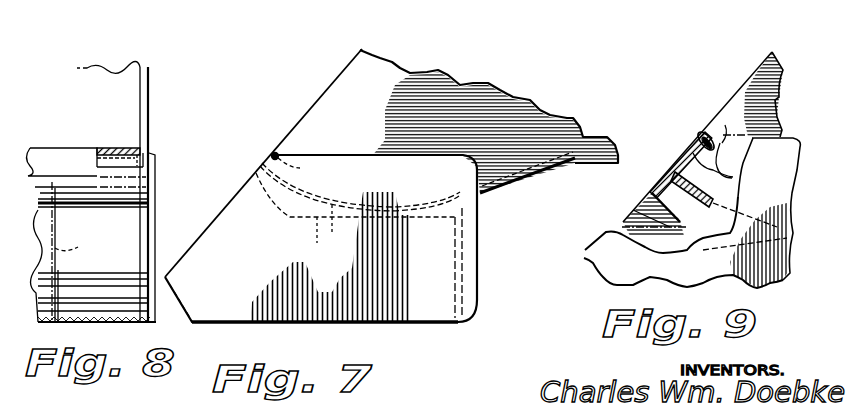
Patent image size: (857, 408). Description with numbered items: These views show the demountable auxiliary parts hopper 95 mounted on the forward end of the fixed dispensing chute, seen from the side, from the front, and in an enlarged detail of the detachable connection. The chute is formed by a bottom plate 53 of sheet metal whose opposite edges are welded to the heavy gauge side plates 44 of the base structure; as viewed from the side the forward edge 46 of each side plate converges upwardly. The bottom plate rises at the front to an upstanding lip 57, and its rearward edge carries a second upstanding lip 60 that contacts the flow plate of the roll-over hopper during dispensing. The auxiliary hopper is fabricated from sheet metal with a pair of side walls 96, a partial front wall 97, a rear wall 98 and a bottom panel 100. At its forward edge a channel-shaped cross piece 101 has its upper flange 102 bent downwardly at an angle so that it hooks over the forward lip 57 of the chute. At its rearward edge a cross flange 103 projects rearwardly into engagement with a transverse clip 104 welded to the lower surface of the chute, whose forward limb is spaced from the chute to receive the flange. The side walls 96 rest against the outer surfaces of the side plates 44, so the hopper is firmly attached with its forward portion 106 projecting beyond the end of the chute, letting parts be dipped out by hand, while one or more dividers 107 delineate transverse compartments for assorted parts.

In FIG. 8, the side plate 44 is at (152, 92).
In FIG. 7, the side plate 44 is at (560, 128).
In FIG. 9, the side plate 44 is at (798, 56).
In FIG. 7, the forward edge 46 is at (325, 93).
In FIG. 9, the forward edge 46 is at (760, 67).
In FIG. 7, the bottom plate 53 is at (355, 212).
In FIG. 8, the upstanding lip 57 is at (147, 153).
In FIG. 9, the upstanding lip 57 is at (737, 163).
In FIG. 7, the upstanding lip 60 is at (582, 129).
In FIG. 8, the auxiliary parts hopper 95 is at (60, 321).
In FIG. 7, the auxiliary parts hopper 95 is at (233, 221).
In FIG. 8, the side wall 96 is at (148, 242).
In FIG. 7, the side wall 96 is at (408, 300).
In FIG. 9, the side wall 96 is at (772, 267).
In FIG. 8, the partial front wall 97 is at (110, 285).
In FIG. 7, the partial front wall 97 is at (169, 296).
In FIG. 7, the rear wall 98 is at (462, 257).
In FIG. 7, the bottom panel 100 is at (327, 325).
In FIG. 8, the cross piece 101 is at (48, 163).
In FIG. 7, the cross piece 101 is at (270, 160).
In FIG. 9, the cross piece 101 is at (662, 170).
In FIG. 8, the upper flange 102 is at (120, 148).
In FIG. 7, the upper flange 102 is at (300, 167).
In FIG. 9, the upper flange 102 is at (725, 132).
In FIG. 7, the cross flange 103 is at (467, 192).
In FIG. 7, the transverse clip 104 is at (494, 189).
In FIG. 8, the forward portion 106 is at (94, 252).
In FIG. 7, the forward portion 106 is at (191, 246).
In FIG. 9, the forward portion 106 is at (597, 246).
In FIG. 8, the divider 107 is at (84, 251).
In FIG. 7, the divider 107 is at (314, 241).
In FIG. 9, the divider 107 is at (636, 211).